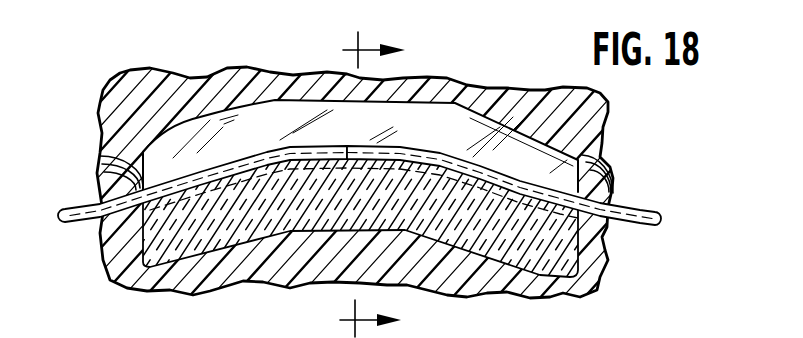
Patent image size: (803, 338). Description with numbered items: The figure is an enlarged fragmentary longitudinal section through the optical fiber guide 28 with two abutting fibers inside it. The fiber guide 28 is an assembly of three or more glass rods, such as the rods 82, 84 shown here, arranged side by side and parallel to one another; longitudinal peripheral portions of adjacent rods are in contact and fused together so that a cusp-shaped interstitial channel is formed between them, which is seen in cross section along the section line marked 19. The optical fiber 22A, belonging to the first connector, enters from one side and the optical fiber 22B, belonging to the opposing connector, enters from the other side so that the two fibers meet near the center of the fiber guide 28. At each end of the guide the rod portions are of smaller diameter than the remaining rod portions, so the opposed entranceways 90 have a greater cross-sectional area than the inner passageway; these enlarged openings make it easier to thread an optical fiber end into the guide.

The fiber guide 28 is at (664, 133).
The glass rod 82 is at (424, 138).
The glass rod 84 is at (536, 278).
The entranceway 90 is at (113, 184).
The optical fiber 22A is at (83, 222).
The optical fiber 22B is at (640, 223).
The section line indicator for FIG. 19 is at (345, 176).